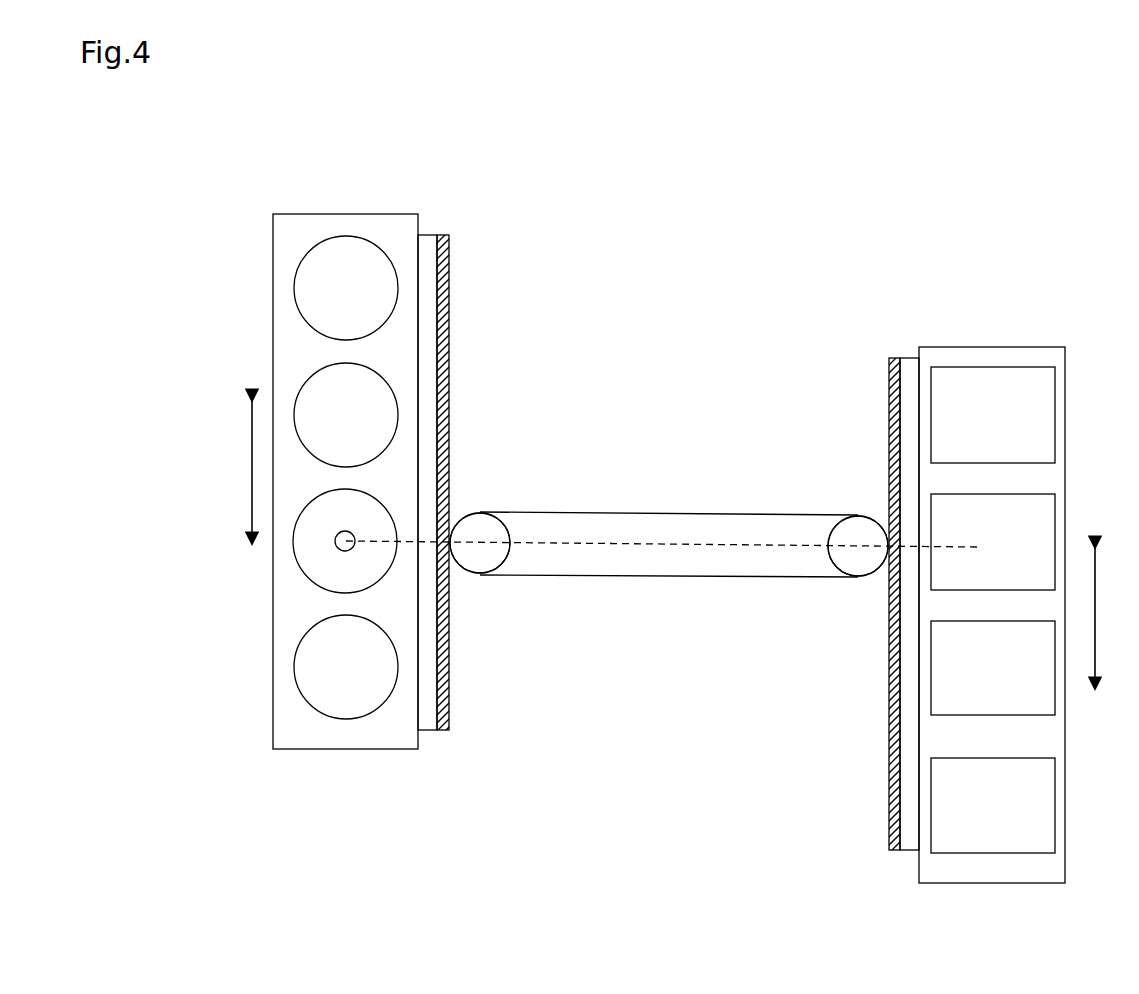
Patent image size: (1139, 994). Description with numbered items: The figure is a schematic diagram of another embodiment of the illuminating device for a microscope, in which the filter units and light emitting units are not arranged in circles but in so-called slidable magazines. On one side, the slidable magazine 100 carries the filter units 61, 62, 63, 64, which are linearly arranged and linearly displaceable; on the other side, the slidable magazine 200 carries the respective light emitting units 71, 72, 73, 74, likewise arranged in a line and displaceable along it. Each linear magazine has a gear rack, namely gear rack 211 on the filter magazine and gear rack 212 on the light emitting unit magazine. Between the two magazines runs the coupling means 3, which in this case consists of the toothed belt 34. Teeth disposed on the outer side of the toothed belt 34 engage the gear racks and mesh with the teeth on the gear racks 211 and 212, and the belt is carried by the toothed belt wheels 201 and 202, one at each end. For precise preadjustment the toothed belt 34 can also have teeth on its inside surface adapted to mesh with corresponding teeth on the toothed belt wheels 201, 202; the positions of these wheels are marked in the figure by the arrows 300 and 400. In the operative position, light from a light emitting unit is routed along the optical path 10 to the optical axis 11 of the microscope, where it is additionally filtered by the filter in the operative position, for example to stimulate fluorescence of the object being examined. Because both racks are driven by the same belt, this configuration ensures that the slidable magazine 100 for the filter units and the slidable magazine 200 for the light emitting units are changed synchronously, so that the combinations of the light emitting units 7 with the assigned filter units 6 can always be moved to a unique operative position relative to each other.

The slidable magazine 100 is at (336, 437).
The slidable magazine 200 is at (974, 534).
The filter units 6 is at (285, 479).
The filter unit 61 is at (325, 277).
The filter unit 62 is at (303, 424).
The filter unit 63 is at (302, 552).
The filter unit 64 is at (325, 667).
The optical axis 11 is at (340, 538).
The gear rack 211 is at (449, 700).
The gear rack 212 is at (889, 788).
The coupling means 3 is at (662, 553).
The toothed belt 34 is at (662, 512).
The optical path 10 is at (602, 545).
The toothed belt wheel 201 is at (531, 586).
The toothed belt wheel 202 is at (825, 604).
The first roller bearing 300 is at (478, 500).
The second roller bearing 400 is at (840, 512).
The light emitting units 7 is at (974, 576).
The light emitting unit 71 is at (940, 815).
The light emitting unit 72 is at (1033, 685).
The light emitting unit 73 is at (940, 535).
The light emitting unit 74 is at (960, 400).